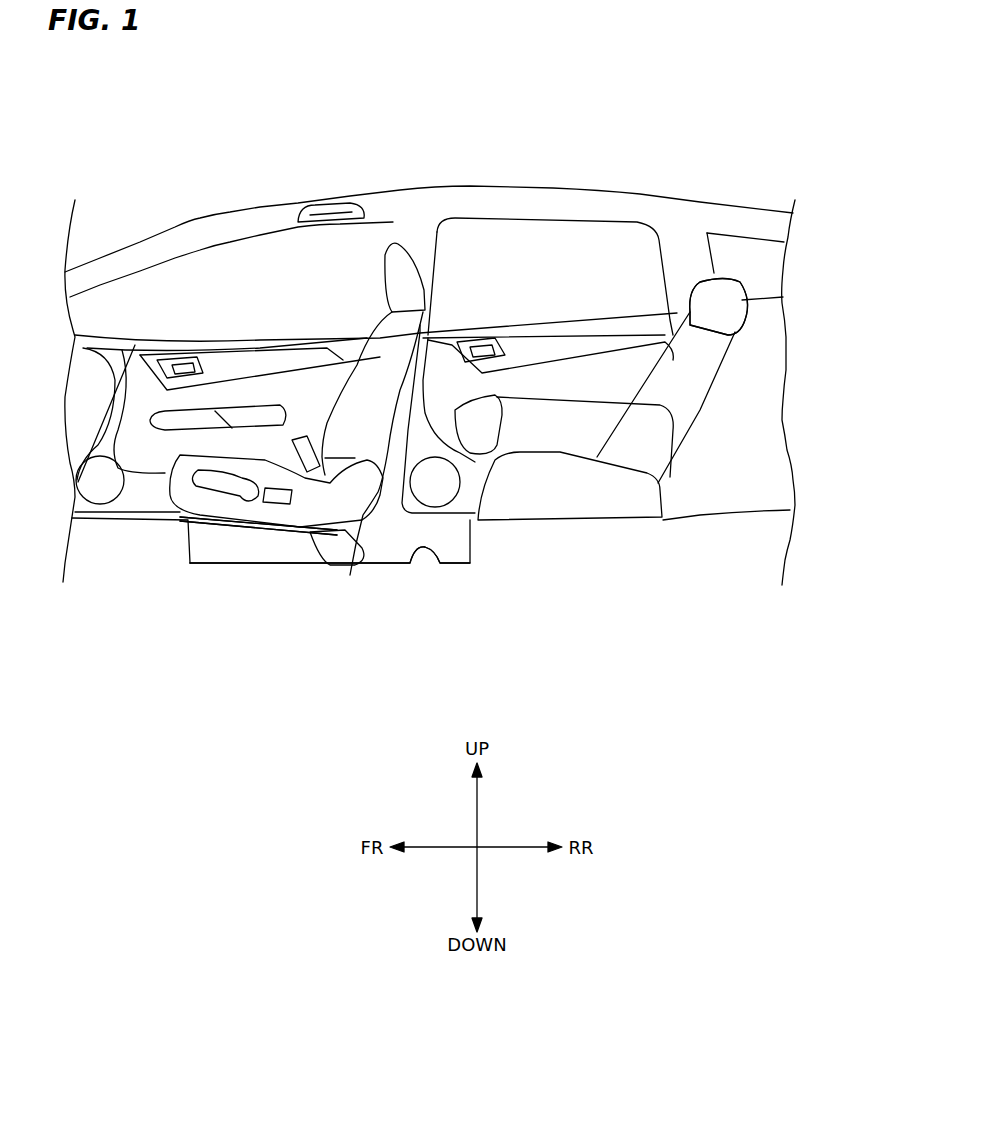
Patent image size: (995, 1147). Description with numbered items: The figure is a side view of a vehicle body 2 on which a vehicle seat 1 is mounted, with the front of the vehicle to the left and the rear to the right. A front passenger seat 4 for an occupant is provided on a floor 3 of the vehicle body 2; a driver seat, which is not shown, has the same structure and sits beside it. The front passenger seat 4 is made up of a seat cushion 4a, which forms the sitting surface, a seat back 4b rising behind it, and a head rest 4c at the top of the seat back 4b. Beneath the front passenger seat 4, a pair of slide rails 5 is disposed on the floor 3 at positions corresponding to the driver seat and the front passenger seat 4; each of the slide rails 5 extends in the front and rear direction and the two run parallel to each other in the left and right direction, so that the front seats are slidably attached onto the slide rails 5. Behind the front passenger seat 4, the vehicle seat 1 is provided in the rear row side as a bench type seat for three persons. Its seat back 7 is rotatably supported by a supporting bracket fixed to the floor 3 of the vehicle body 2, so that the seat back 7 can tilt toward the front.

The vehicle seat 1 is at (737, 268).
The vehicle body 2 is at (429, 374).
The floor 3 is at (440, 560).
The front passenger seat 4 is at (297, 375).
The seat cushion 4a is at (277, 478).
The seat back 4b is at (358, 438).
The head rest 4c is at (397, 290).
The slide rails 5 is at (198, 542).
The seat back 7 is at (557, 388).